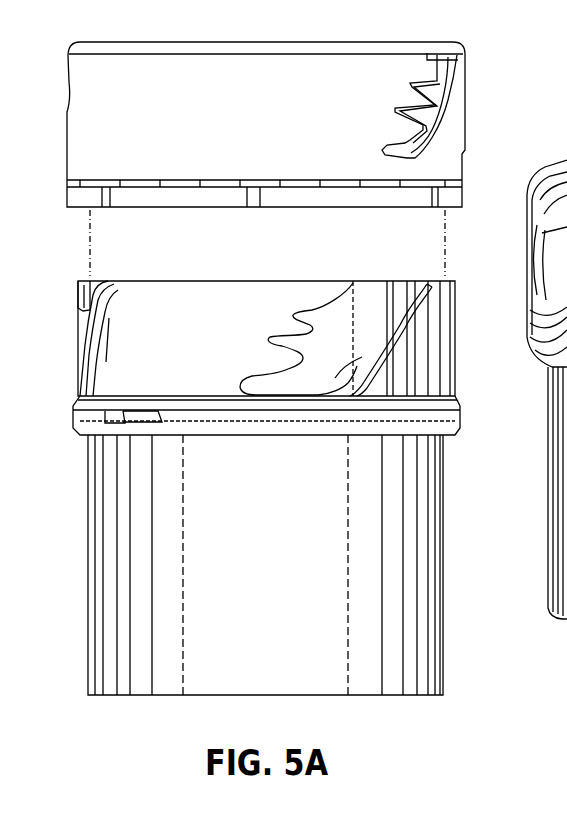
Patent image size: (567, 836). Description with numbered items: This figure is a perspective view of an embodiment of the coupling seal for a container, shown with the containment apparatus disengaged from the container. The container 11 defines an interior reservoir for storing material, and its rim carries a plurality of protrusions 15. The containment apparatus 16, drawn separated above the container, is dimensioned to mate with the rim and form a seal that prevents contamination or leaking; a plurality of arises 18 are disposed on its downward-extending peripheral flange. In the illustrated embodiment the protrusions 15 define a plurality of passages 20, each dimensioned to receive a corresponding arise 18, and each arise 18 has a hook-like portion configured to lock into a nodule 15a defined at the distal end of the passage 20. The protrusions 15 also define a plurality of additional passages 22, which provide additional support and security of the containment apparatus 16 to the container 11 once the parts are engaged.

The container 11 is at (88, 507).
The plurality of protrusions 15 is at (128, 340).
The nodule 15a is at (259, 373).
The containment apparatus 16 is at (67, 110).
The arise 18 is at (433, 87).
The passage 20 is at (335, 378).
The additional passage 22 is at (298, 340).